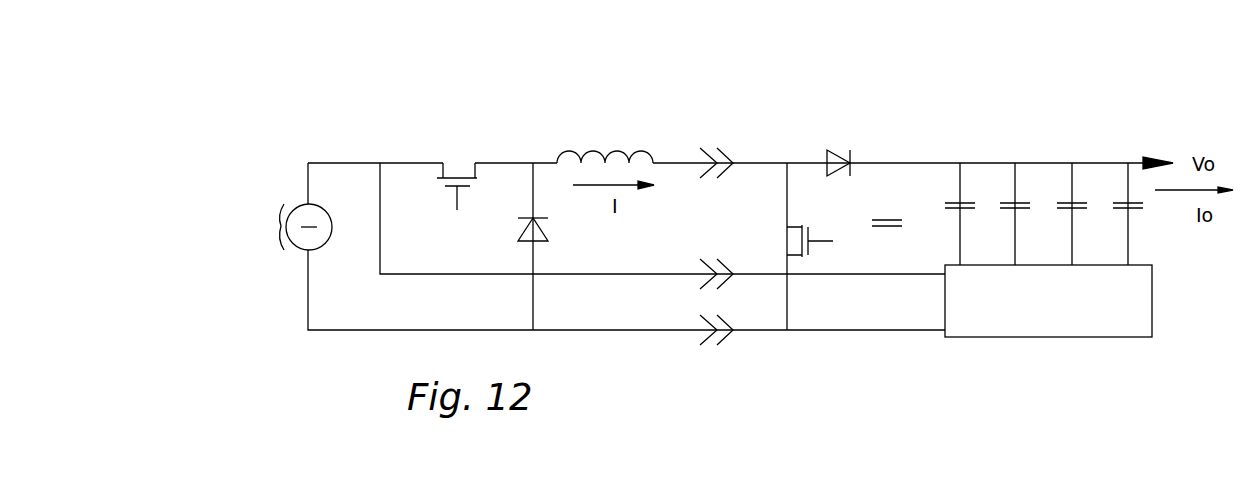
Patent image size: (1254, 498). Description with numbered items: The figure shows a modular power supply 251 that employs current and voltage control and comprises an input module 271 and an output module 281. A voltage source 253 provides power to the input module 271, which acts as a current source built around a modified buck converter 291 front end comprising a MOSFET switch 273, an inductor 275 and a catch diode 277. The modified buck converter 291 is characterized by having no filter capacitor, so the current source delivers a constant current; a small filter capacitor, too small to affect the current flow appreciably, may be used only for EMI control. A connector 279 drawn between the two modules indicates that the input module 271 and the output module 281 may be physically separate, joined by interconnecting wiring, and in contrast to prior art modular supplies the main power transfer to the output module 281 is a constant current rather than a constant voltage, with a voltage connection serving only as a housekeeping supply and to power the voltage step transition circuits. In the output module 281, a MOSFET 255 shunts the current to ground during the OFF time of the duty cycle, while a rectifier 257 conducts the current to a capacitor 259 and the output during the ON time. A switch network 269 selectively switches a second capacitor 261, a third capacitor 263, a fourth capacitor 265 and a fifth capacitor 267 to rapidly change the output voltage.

The modular power supply 251 is at (395, 73).
The voltage source 253 is at (327, 250).
The input module 271 is at (533, 92).
The MOSFET switch Q 273 is at (457, 160).
The inductor L 275 is at (645, 147).
The catch diode Cr 277 is at (517, 238).
The connector 279 is at (685, 317).
The modified buck converter 291 is at (687, 80).
The output module 281 is at (910, 75).
The MOSFET 255 is at (790, 240).
The rectifier 257 is at (860, 150).
The capacitor 259 is at (877, 237).
The capacitor C2 261 is at (977, 187).
The capacitor C3 263 is at (1003, 190).
The capacitor C4 265 is at (1087, 188).
The capacitor C5 267 is at (1114, 190).
The switch network 269 is at (973, 345).